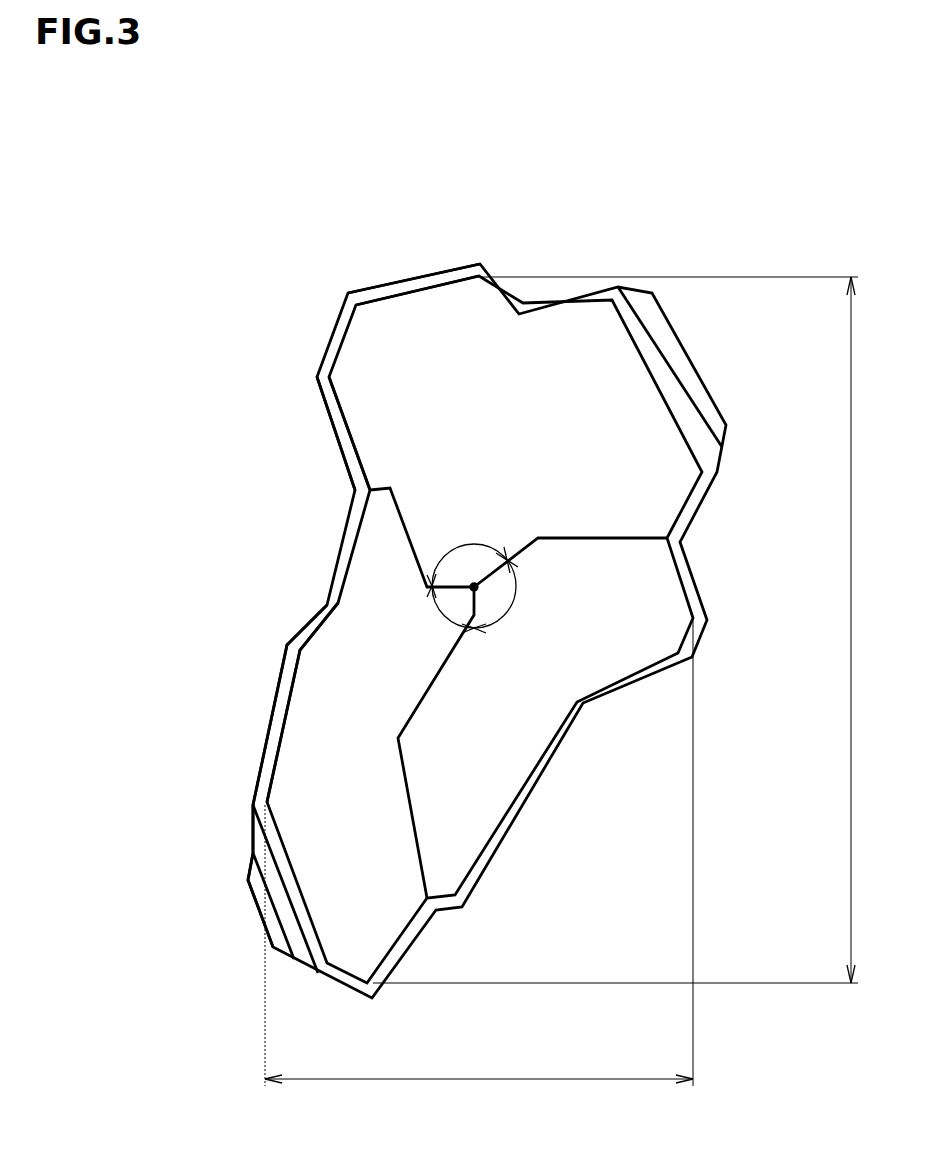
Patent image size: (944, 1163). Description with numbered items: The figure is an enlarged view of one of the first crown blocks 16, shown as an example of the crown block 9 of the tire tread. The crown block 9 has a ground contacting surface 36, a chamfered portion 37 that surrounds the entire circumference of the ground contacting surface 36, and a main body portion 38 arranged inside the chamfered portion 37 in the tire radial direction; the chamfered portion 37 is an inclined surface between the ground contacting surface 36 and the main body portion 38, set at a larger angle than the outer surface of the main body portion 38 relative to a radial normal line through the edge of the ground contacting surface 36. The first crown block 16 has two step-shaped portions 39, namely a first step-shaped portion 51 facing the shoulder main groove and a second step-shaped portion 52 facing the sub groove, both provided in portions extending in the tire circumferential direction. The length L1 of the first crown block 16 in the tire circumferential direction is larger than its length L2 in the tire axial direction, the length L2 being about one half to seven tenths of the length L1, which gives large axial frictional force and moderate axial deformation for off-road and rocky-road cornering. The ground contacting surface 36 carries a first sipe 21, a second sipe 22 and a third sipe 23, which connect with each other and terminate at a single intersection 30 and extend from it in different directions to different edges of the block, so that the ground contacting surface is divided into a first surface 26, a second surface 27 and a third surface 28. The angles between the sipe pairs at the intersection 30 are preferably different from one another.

The crown block 9 is at (414, 250).
The first crown block 16 is at (356, 251).
The first sipe 21 is at (405, 538).
The second sipe 22 is at (597, 535).
The third sipe 23 is at (418, 837).
The first surface 26 is at (488, 432).
The second surface 27 is at (323, 752).
The third surface 28 is at (480, 704).
The intersection 30 is at (480, 592).
The ground contacting surface 36 is at (400, 338).
The chamfered portion 37 is at (332, 403).
The main body portion 38 is at (270, 718).
The step-shaped portion 39 is at (253, 891).
The first step-shaped portion 51 is at (293, 927).
The second step-shaped portion 52 is at (660, 353).
The length in tire circumferential direction L1 is at (634, 630).
The length in tire axial direction L2 is at (479, 867).